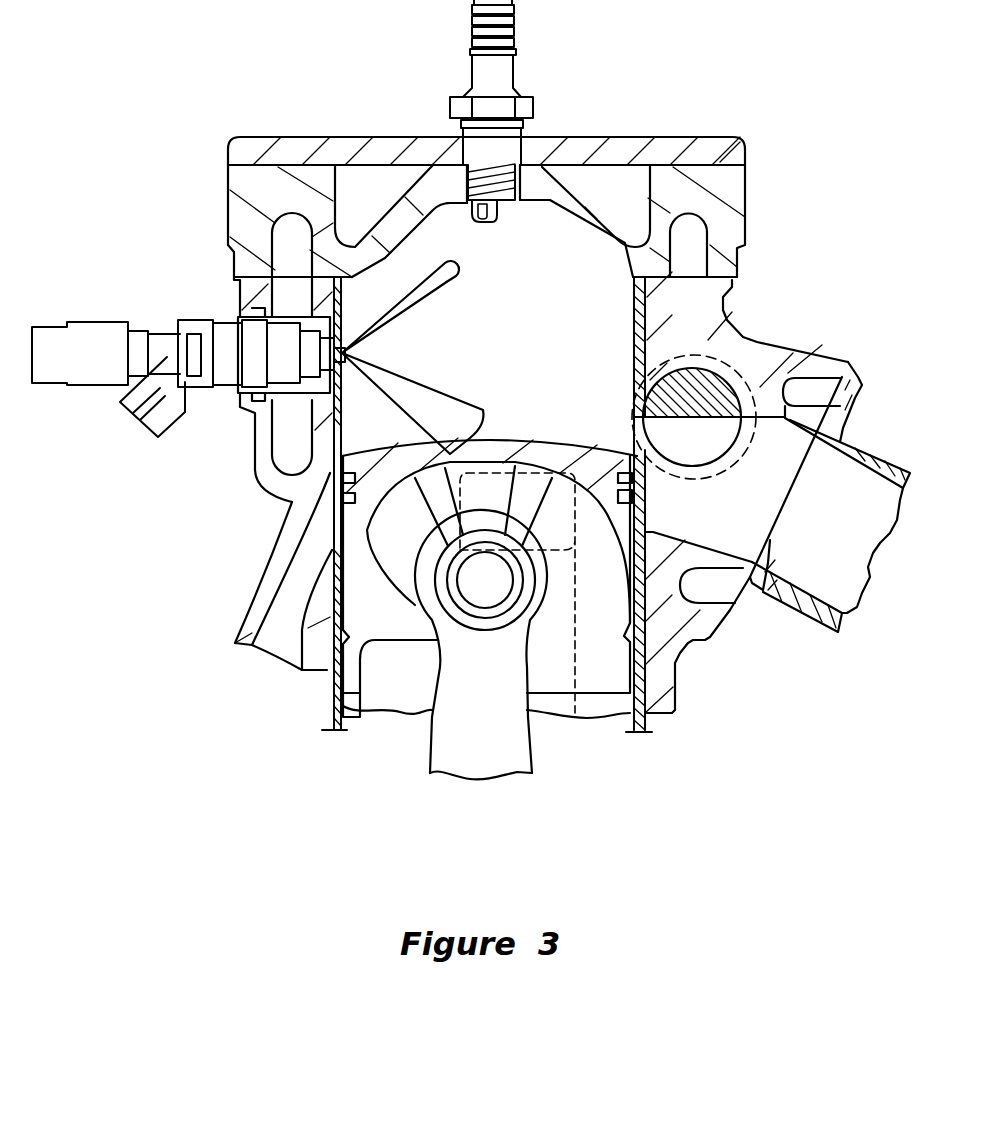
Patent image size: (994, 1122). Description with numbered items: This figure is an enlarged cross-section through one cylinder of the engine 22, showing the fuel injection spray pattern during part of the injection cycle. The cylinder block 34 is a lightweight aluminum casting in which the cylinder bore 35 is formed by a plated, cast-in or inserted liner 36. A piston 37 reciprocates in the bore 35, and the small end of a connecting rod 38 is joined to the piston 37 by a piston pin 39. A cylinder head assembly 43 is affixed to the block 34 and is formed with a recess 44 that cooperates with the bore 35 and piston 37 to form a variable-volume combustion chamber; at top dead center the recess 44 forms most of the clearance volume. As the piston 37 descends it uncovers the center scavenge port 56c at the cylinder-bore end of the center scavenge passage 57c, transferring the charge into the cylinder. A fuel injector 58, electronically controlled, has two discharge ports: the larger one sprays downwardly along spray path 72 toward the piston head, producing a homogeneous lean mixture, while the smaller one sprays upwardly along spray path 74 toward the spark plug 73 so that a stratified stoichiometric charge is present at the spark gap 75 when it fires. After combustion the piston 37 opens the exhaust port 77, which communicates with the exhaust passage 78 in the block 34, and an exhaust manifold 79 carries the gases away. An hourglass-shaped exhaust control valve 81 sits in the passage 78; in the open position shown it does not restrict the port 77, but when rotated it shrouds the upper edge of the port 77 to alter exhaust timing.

The engine 22 is at (712, 108).
The cylinder block 34 is at (258, 484).
The cylinder bore 35 is at (637, 332).
The liner 36 is at (637, 305).
The piston 37 is at (547, 452).
The connecting rod 38 is at (443, 755).
The piston pin 39 is at (457, 597).
The cylinder head assembly 43 is at (747, 188).
The recess 44 is at (575, 198).
The center scavenge port 56c is at (330, 493).
The center scavenge passage 57c is at (277, 650).
The fuel injector 58 is at (135, 330).
The spray path 72 is at (420, 378).
The spark plug 73 is at (503, 68).
The spray path 74 is at (445, 300).
The spark gap 75 is at (488, 220).
The exhaust port 77 is at (632, 432).
The exhaust passage 78 is at (720, 524).
The exhaust manifold 79 is at (812, 620).
The exhaust control valve 81 is at (743, 455).